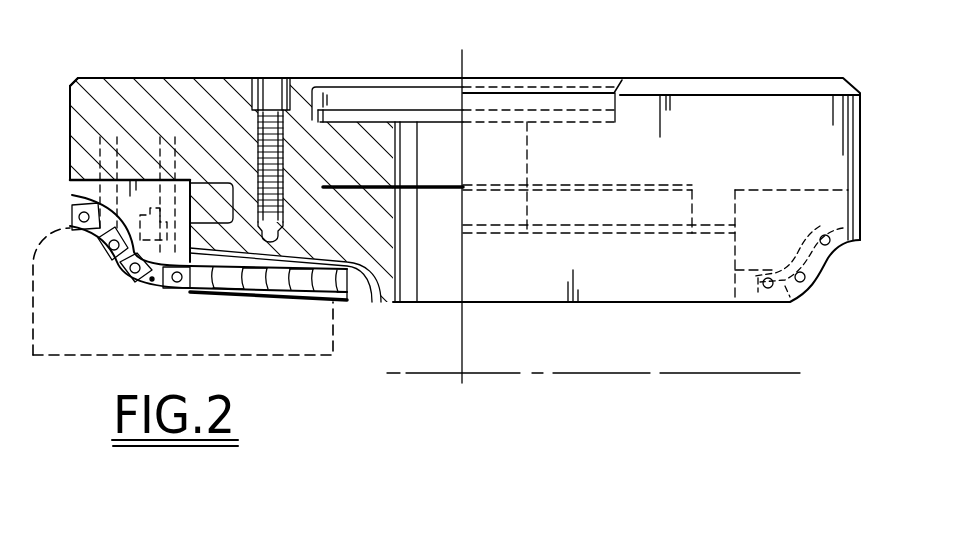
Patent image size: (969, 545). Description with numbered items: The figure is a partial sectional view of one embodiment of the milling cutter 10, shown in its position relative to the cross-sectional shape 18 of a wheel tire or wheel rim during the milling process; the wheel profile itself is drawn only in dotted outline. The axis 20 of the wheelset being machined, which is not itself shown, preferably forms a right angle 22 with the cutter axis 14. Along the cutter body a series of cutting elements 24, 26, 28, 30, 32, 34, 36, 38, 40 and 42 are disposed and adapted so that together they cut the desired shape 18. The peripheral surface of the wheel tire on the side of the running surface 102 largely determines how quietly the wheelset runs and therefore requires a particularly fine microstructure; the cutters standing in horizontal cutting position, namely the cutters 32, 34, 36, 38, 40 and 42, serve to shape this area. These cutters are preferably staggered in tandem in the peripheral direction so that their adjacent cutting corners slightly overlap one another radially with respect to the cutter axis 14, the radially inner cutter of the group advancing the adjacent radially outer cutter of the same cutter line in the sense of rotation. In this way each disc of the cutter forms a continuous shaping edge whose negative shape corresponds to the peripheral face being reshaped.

The milling cutter 10 is at (134, 38).
The cutter axis 14 is at (463, 272).
The cross-sectional shape 18 is at (80, 334).
The axis 20 is at (560, 373).
The right angle 22 is at (428, 373).
The cutting element 24 is at (72, 214).
The cutting element 26 is at (110, 249).
The cutting element 28 is at (126, 279).
The cutting element 30 is at (150, 290).
The cutting element 32 is at (203, 293).
The cutting element 34 is at (232, 292).
The cutting element 36 is at (267, 293).
The cutting element 38 is at (272, 303).
The cutting element 40 is at (317, 293).
The cutting element 42 is at (340, 302).
The running surface 102 is at (335, 356).